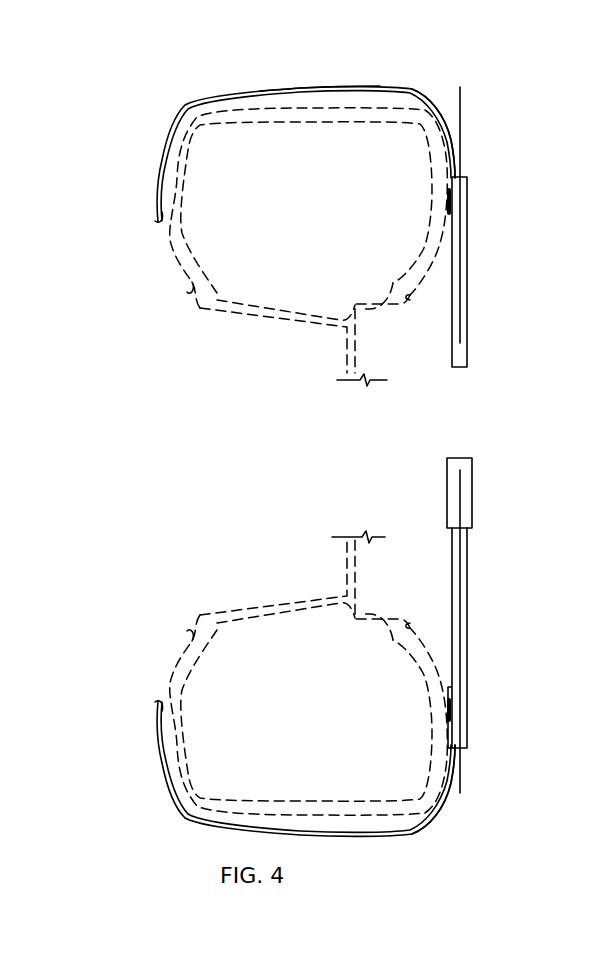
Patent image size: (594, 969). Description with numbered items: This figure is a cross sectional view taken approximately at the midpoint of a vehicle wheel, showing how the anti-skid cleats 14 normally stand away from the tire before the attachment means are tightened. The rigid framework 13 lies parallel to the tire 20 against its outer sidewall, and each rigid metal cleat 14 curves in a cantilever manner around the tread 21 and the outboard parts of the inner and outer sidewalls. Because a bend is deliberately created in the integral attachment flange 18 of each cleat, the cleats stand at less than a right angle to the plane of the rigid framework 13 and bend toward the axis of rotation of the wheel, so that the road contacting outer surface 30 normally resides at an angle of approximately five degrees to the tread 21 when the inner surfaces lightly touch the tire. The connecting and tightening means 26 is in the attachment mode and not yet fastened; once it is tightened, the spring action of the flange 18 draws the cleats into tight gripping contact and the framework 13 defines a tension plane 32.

The rigid framework 13 is at (490, 278).
The rigid metal cleat 14 is at (185, 104).
The integral attachment flange 18 is at (427, 103).
The tire 20 is at (190, 642).
The tread 21 is at (344, 109).
The connecting and tightening means 26 is at (473, 484).
The outer surface 30 is at (320, 87).
The tension plane 32 is at (462, 163).